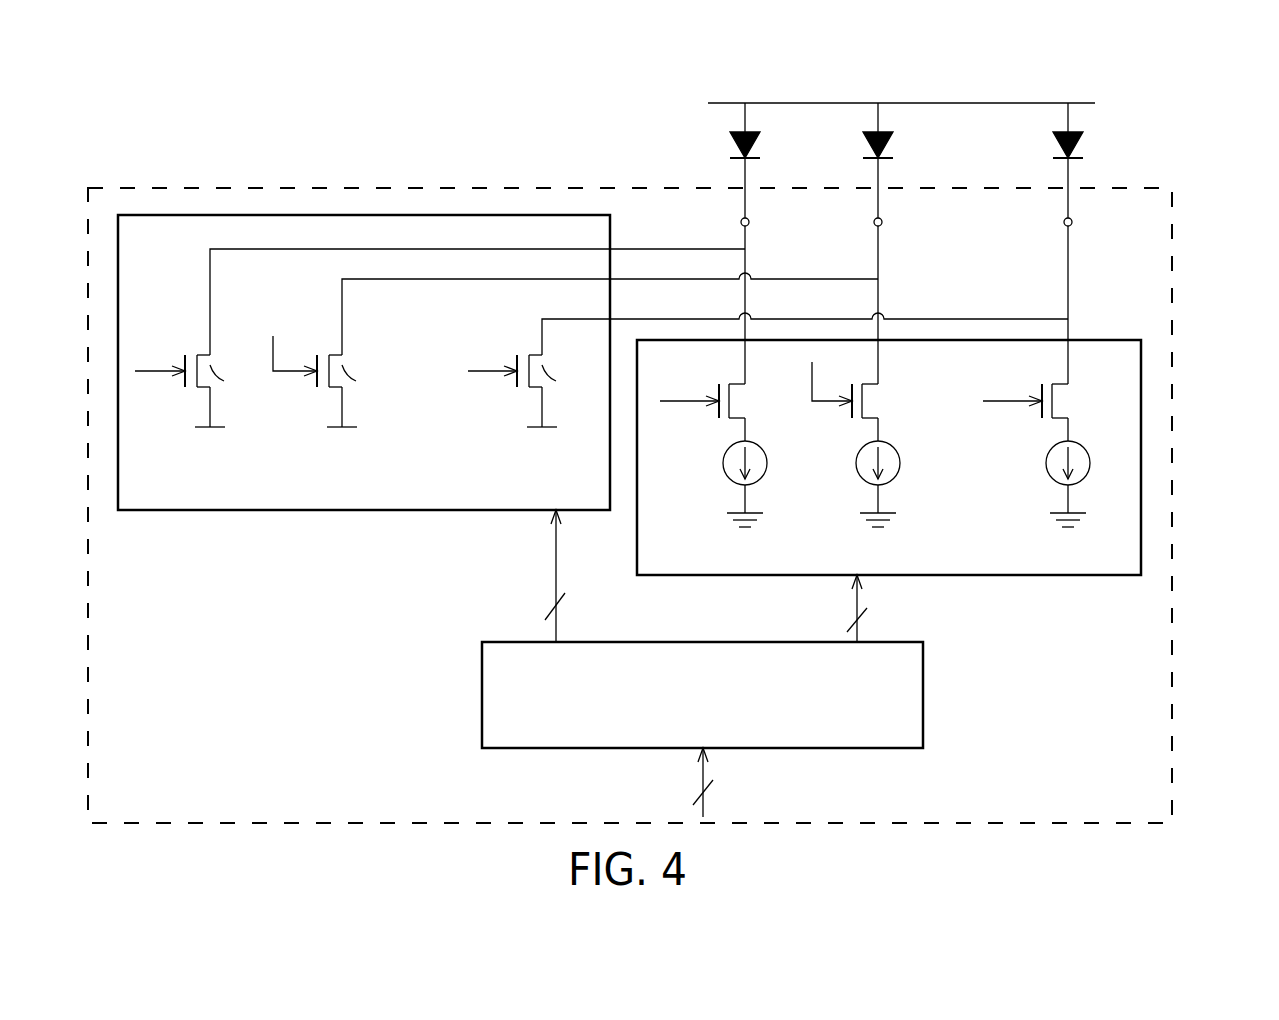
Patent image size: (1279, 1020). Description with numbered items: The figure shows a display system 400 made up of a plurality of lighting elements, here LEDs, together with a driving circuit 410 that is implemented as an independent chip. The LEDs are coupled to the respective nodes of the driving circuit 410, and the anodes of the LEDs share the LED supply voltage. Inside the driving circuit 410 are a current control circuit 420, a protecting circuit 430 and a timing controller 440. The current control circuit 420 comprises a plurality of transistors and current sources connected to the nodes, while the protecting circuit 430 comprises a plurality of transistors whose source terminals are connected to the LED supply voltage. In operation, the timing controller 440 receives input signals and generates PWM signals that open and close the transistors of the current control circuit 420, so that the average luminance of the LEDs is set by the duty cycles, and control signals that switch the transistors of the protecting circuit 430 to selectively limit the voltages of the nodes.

The display system 400 is at (1165, 103).
The driving circuit 410 is at (351, 187).
The current control circuit 420 is at (1087, 577).
The protecting circuit 430 is at (197, 512).
The timing controller 440 is at (482, 703).